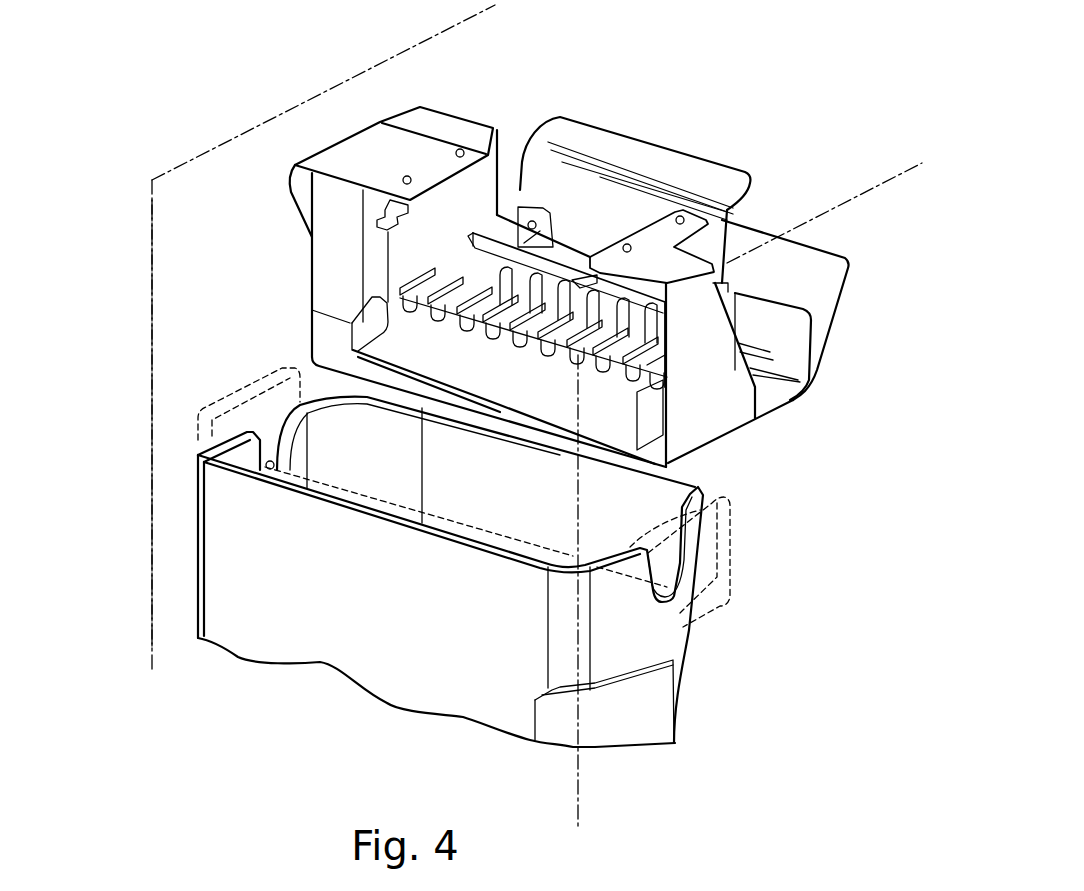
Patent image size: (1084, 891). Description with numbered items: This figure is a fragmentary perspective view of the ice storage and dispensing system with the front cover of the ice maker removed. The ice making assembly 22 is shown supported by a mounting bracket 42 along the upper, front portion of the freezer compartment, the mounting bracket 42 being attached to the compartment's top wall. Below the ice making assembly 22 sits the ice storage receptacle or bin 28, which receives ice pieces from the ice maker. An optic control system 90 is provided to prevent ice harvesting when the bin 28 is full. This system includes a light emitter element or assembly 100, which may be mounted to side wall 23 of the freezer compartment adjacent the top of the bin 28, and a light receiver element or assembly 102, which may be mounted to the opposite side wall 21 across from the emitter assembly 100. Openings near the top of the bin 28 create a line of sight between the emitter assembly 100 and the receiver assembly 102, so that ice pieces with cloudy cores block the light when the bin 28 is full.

The ice making assembly 22 is at (818, 128).
The mounting bracket 42 is at (384, 162).
The side wall 23 is at (203, 257).
The optic control system 90 is at (186, 450).
The ice storage receptacle or bin 28 is at (245, 557).
The side wall 21 is at (580, 493).
The light emitter element or assembly 100 is at (220, 397).
The light receiver element or assembly 102 is at (717, 578).